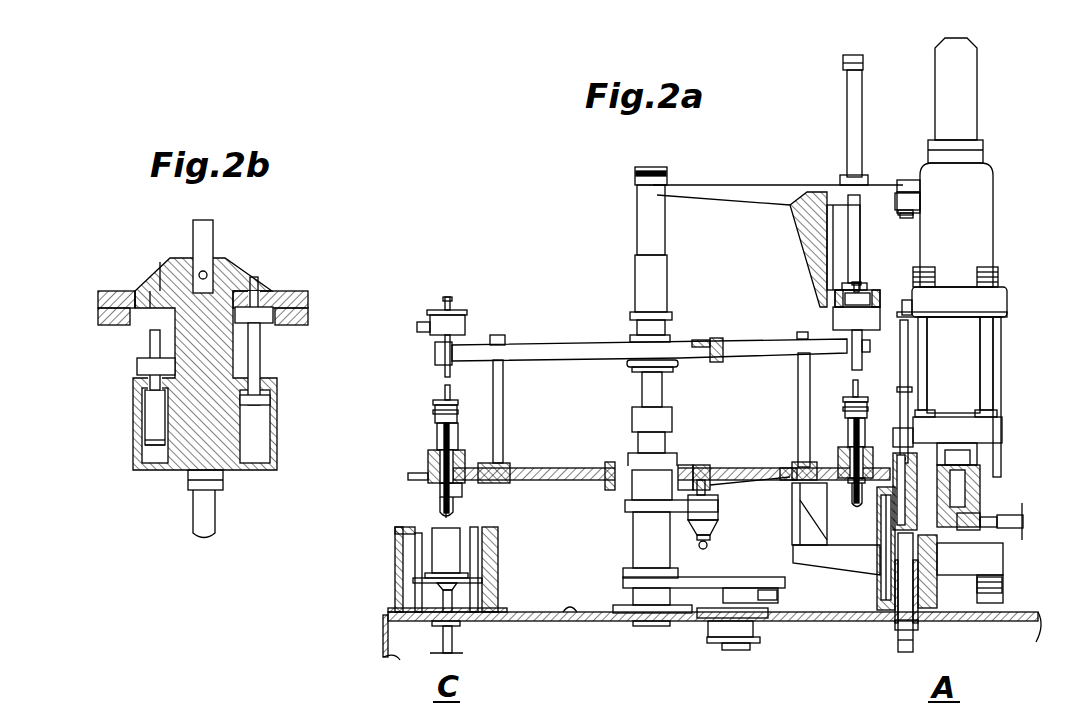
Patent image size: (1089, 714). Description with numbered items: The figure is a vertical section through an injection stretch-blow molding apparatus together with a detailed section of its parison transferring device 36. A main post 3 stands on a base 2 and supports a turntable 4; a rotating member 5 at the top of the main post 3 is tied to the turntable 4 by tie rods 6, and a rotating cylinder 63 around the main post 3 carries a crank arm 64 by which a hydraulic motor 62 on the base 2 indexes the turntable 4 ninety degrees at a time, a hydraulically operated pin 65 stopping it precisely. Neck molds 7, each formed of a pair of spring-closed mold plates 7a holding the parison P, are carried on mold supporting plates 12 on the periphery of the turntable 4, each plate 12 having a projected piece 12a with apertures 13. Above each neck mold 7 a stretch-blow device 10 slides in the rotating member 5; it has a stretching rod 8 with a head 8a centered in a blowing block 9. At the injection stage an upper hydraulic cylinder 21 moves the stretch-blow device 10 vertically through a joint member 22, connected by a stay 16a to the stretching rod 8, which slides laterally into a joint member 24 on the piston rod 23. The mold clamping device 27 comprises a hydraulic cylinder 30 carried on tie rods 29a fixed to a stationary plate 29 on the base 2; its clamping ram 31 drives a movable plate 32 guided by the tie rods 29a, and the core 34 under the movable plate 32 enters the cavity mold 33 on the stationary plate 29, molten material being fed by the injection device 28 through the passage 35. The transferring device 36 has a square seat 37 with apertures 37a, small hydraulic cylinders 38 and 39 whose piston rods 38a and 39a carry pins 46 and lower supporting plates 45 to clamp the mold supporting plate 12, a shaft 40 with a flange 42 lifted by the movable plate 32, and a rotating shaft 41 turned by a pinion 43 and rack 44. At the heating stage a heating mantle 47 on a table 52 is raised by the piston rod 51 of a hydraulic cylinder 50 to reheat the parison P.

In FIG. 2A, the base 2 is at (570, 613).
In FIG. 2A, the main post 3 is at (652, 385).
In FIG. 2A, the turntable 4 is at (565, 468).
In FIG. 2A, the rotating member 5 is at (563, 347).
In FIG. 2A, the tie rods 6 is at (503, 405).
In FIG. 2A, the neck mold 7 is at (433, 490).
In FIG. 2B, the mold plates 7a is at (99, 322).
In FIG. 2A, the stretching rod 8 is at (455, 510).
In FIG. 2A, the head 8a is at (447, 297).
In FIG. 2A, the blowing block 9 is at (438, 460).
In FIG. 2A, the stretch-blow device 10 is at (428, 384).
In FIG. 2B, the mold supporting plate 12 is at (100, 300).
In FIG. 2A, the mold supporting plate 12 is at (428, 475).
In FIG. 2B, the projected piece 12a is at (135, 292).
In FIG. 2B, the apertures 13 is at (155, 300).
In FIG. 2A, the stay 16a is at (674, 386).
In FIG. 2A, the upper hydraulic cylinder 21 is at (855, 107).
In FIG. 2A, the joint member 22 is at (437, 322).
In FIG. 2A, the piston rod 23 is at (852, 232).
In FIG. 2A, the joint member 24 is at (873, 290).
In FIG. 2A, the mold clamping device 27 is at (1000, 243).
In FIG. 2A, the injection device 28 is at (1024, 521).
In FIG. 2A, the stationary plate 29 is at (812, 557).
In FIG. 2A, the tie rods 29a is at (1000, 325).
In FIG. 2A, the hydraulic cylinder 30 is at (985, 190).
In FIG. 2A, the clamping ram 31 is at (963, 355).
In FIG. 2A, the movable plate 32 is at (985, 435).
In FIG. 2A, the cavity mold 33 is at (1000, 578).
In FIG. 2A, the core 34 is at (985, 510).
In FIG. 2A, the passage 35 is at (960, 545).
In FIG. 2B, the parison transferring device 36 is at (187, 450).
In FIG. 2A, the parison transferring device 36 is at (880, 570).
In FIG. 2B, the square seat 37 is at (232, 258).
In FIG. 2B, the apertures 37a is at (150, 285).
In FIG. 2B, the hydraulic cylinder 38 is at (134, 422).
In FIG. 2B, the piston rod 38a is at (150, 397).
In FIG. 2B, the hydraulic cylinder 39 is at (278, 425).
In FIG. 2B, the piston rod 39a is at (262, 368).
In FIG. 2B, the shaft 40 is at (196, 232).
In FIG. 2A, the shaft 40 is at (900, 378).
In FIG. 2B, the rotating shaft 41 is at (203, 512).
In FIG. 2A, the rotating shaft 41 is at (913, 625).
In FIG. 2A, the flange 42 is at (898, 388).
In FIG. 2A, the pinion 43 is at (900, 648).
In FIG. 2A, the rack 44 is at (897, 600).
In FIG. 2B, the lower supporting plate 45 is at (140, 366).
In FIG. 2B, the pins 46 is at (150, 345).
In FIG. 2A, the heating mantle 47 is at (460, 550).
In FIG. 2A, the hydraulic cylinder 50 is at (452, 640).
In FIG. 2A, the piston rod 51 is at (450, 598).
In FIG. 2A, the table 52 is at (413, 580).
In FIG. 2A, the hydraulic motor 62 is at (720, 628).
In FIG. 2A, the rotating cylinder 63 is at (645, 537).
In FIG. 2A, the crank arm 64 is at (755, 578).
In FIG. 2A, the pin 65 is at (715, 497).
In FIG. 2A, the parison P is at (440, 508).